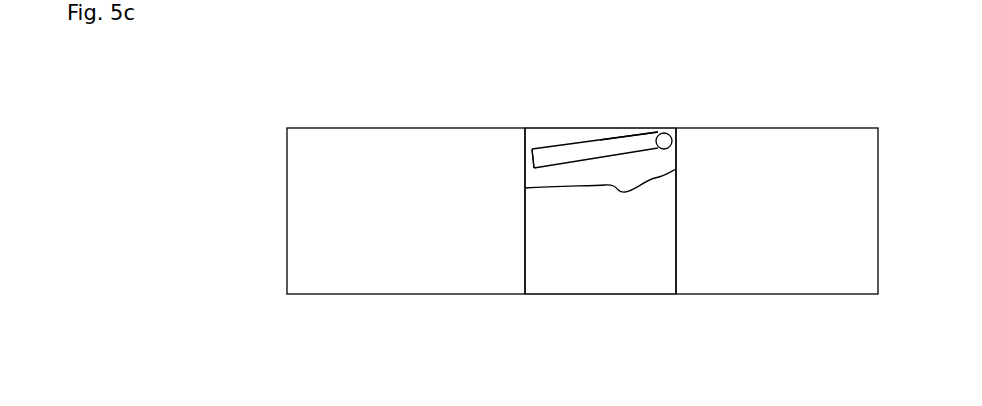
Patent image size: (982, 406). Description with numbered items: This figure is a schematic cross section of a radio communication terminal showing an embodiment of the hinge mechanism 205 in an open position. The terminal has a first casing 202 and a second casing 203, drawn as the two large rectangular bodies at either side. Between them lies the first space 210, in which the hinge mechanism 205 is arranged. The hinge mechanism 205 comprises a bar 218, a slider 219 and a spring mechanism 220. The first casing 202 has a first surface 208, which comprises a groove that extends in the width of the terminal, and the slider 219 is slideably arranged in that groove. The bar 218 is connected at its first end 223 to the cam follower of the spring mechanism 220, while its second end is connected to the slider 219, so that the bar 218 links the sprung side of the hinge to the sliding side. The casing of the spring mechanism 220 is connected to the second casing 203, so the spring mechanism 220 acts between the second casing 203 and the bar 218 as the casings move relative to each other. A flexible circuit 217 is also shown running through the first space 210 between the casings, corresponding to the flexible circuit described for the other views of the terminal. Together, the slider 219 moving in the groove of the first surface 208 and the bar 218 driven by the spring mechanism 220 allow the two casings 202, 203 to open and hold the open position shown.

The first casing 202 is at (330, 189).
The second casing 203 is at (843, 233).
The hinge mechanism 205 is at (617, 132).
The first surface 208 is at (525, 260).
The first space 210 is at (618, 263).
The flexible circuit 217 is at (651, 183).
The bar 218 is at (585, 148).
The slider 219 is at (528, 155).
The spring mechanism 220 is at (678, 133).
The first end 223 is at (670, 132).